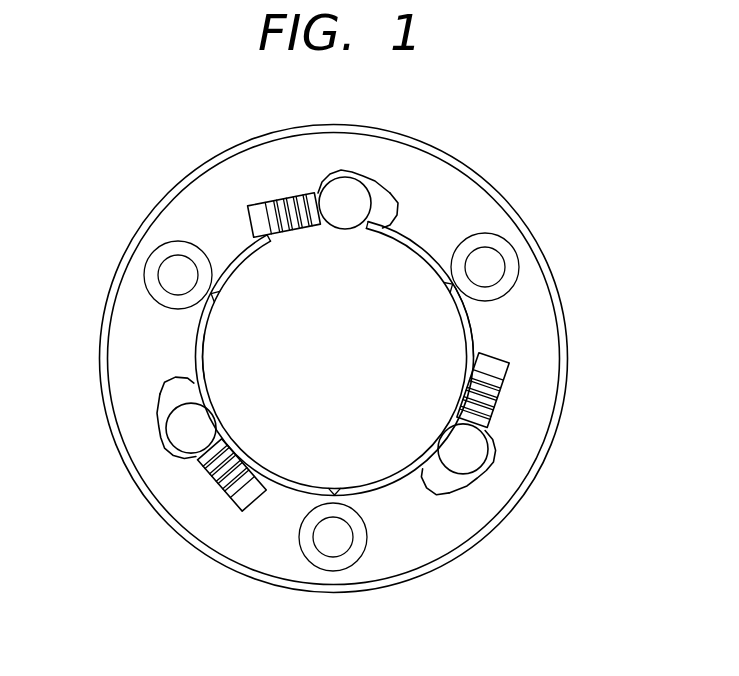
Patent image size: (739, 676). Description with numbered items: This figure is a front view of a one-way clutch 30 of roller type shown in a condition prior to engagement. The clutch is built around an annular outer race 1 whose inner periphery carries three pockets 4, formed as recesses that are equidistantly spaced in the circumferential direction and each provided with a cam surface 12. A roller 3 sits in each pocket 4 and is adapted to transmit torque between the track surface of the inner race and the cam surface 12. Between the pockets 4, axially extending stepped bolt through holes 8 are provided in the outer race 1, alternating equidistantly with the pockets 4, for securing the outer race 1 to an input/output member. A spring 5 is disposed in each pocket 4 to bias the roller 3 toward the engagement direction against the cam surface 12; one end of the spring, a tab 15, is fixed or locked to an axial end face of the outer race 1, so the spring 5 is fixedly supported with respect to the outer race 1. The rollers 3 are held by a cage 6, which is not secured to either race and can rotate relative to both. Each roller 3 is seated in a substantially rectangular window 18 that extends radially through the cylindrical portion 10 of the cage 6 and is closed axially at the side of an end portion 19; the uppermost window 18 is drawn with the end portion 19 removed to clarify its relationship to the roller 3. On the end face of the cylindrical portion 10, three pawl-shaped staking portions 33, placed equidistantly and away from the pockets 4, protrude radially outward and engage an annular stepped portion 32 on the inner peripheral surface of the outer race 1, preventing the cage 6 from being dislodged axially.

The outer race 1 is at (189, 210).
The roller 3 is at (352, 188).
The pocket 4 is at (320, 180).
The spring 5 is at (280, 197).
The cage 6 is at (465, 331).
The bolt through hole 8 is at (350, 547).
The cylindrical portion 10 is at (238, 278).
The cam surface 12 is at (400, 198).
The tab 15 is at (277, 233).
The window 18 is at (341, 231).
The end portion 19 is at (205, 346).
The one-way clutch 30 is at (443, 128).
The annular stepped portion 32 is at (205, 348).
The staking portion 33 is at (443, 290).